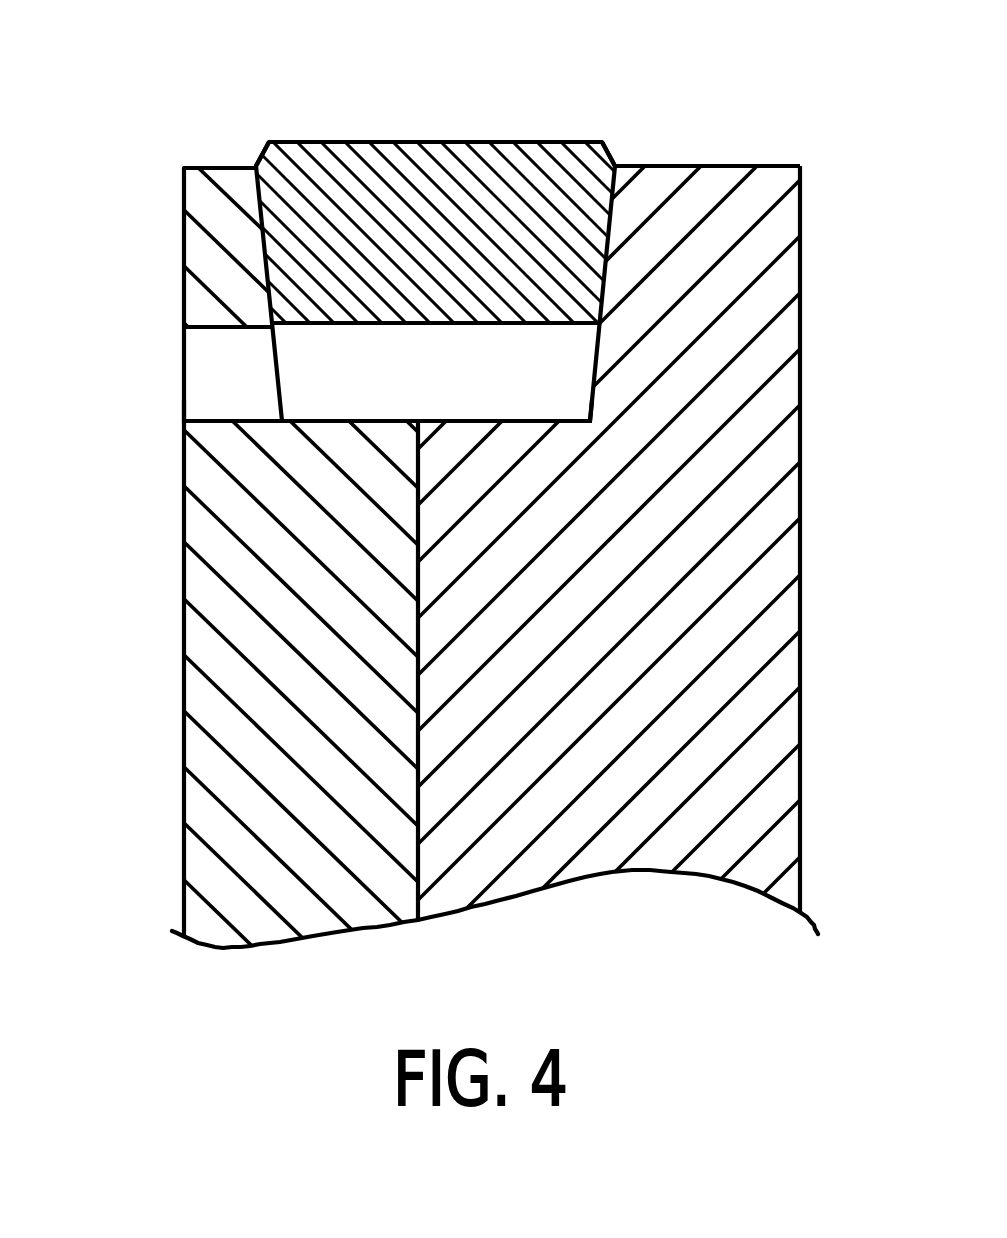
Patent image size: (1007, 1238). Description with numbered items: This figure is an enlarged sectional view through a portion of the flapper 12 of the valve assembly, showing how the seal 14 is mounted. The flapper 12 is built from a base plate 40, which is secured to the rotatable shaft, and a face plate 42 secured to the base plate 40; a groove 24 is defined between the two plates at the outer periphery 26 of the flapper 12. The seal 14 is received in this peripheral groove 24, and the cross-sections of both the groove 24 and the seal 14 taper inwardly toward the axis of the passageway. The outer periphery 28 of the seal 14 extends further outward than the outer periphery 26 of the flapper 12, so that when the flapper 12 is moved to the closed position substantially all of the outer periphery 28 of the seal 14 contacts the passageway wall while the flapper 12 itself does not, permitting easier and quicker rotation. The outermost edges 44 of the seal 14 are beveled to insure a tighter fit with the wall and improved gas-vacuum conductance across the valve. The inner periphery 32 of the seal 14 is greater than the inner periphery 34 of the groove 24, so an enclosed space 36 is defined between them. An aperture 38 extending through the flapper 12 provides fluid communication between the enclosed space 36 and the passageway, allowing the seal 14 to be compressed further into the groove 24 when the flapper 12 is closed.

The flapper 12 is at (142, 640).
The seal 14 is at (447, 116).
The groove 24 is at (615, 366).
The outer periphery of the flapper 26 is at (749, 166).
The outer periphery of the seal 28 is at (545, 142).
The inner periphery of the seal 32 is at (384, 323).
The inner periphery of the groove 34 is at (578, 415).
The enclosed space 36 is at (455, 392).
The aperture 38 is at (222, 420).
The base plate 40 is at (790, 516).
The face plate 42 is at (193, 863).
The outermost edges of the seal 44 is at (262, 156).